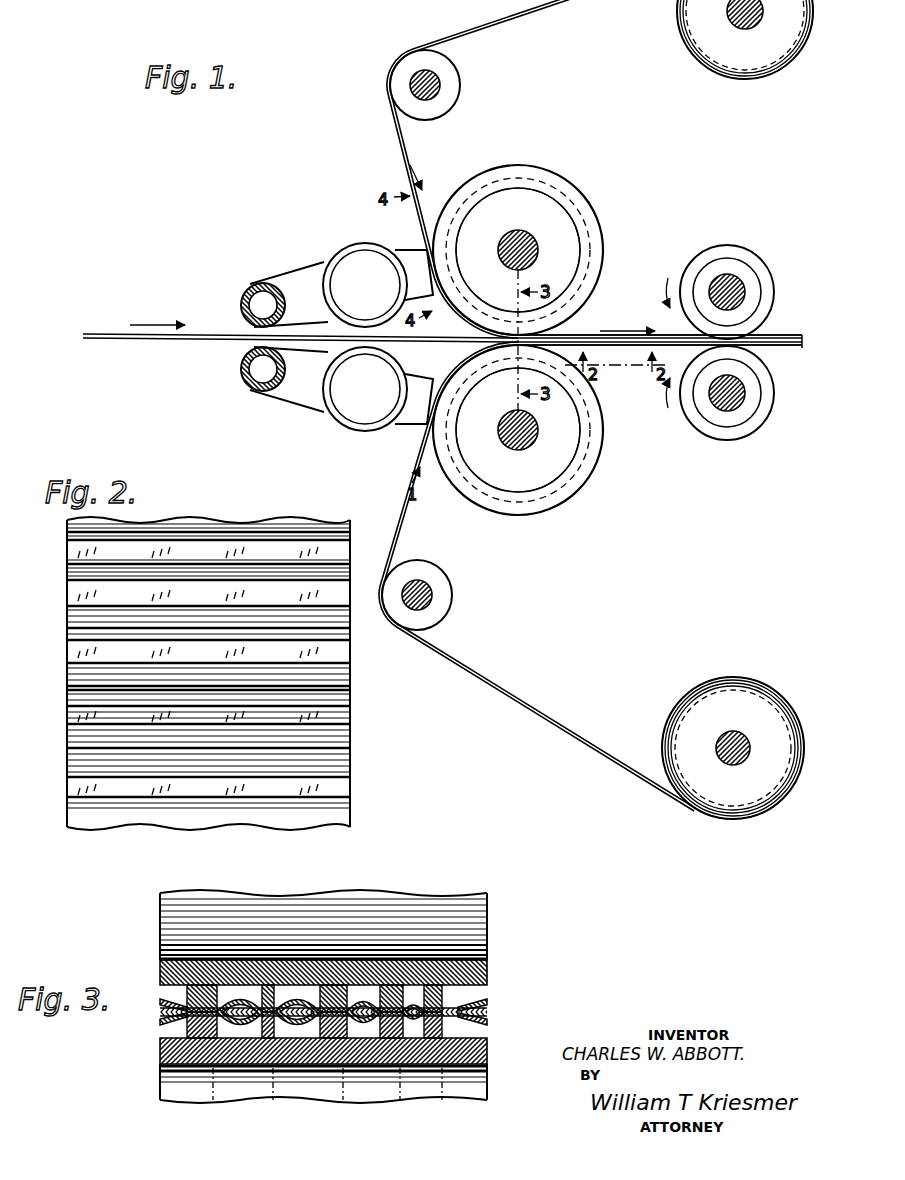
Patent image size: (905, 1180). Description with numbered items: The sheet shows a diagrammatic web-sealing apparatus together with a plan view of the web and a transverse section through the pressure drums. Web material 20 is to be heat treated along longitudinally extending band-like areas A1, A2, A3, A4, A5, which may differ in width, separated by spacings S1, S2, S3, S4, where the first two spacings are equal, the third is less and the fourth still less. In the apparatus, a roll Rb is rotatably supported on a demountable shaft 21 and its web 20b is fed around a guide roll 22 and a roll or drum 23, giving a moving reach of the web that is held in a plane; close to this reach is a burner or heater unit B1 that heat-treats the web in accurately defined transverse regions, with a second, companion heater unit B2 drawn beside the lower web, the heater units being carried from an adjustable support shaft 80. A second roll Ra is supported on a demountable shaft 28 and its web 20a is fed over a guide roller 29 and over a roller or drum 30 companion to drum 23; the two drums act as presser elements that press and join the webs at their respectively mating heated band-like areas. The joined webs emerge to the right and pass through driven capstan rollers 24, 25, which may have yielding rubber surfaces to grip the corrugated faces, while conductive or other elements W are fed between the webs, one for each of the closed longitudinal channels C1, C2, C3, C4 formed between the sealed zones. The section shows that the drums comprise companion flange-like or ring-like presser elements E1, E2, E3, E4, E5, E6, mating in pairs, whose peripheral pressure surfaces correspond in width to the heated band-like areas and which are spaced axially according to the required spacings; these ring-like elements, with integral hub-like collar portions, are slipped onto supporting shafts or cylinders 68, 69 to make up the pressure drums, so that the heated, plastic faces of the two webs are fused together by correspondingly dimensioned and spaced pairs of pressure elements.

In FIG. 1, the conductive or other elements W is at (112, 340).
In FIG. 3, the conductive or other elements W is at (323, 1012).
In FIG. 2, the sheet or web material 20 is at (355, 745).
In FIG. 1, the web 20a is at (803, 334).
In FIG. 3, the web 20a is at (158, 1030).
In FIG. 1, the web 20b is at (408, 152).
In FIG. 3, the web 20b is at (158, 972).
In FIG. 1, the shaft 21 is at (740, 22).
In FIG. 1, the guide roll 22 is at (452, 80).
In FIG. 1, the roll or drum 23 is at (600, 254).
In FIG. 1, the capstan roller or drum 24 is at (750, 265).
In FIG. 1, the capstan roller or drum 25 is at (752, 422).
In FIG. 1, the demountable shaft 28 is at (733, 730).
In FIG. 1, the guide roller 29 is at (444, 598).
In FIG. 1, the roller or drum 30 is at (590, 430).
In FIG. 1, the shaft or cylinder 68 is at (565, 216).
In FIG. 3, the shaft or cylinder 68 is at (158, 930).
In FIG. 1, the shaft or cylinder 69 is at (552, 462).
In FIG. 3, the shaft or cylinder 69 is at (158, 1085).
In FIG. 1, the shaft 80 is at (243, 302).
In FIG. 1, the burner or heater unit B1 is at (340, 245).
In FIG. 1, the lower arm B2 is at (340, 432).
In FIG. 1, the roll Ra is at (722, 795).
In FIG. 1, the roll Rb is at (697, 30).
In FIG. 2, the strip or band-like area A1 is at (75, 790).
In FIG. 3, the strip or band-like area A1 is at (202, 1003).
In FIG. 2, the strip or band-like area A2 is at (75, 653).
In FIG. 3, the strip or band-like area A2 is at (340, 1003).
In FIG. 2, the strip or band-like area A3 is at (75, 597).
In FIG. 3, the strip or band-like area A3 is at (392, 1003).
In FIG. 2, the strip or band-like area A4 is at (75, 551).
In FIG. 3, the strip or band-like area A4 is at (440, 1003).
In FIG. 2, the strip or band-like area A5 is at (75, 718).
In FIG. 3, the strip or band-like area A5 is at (267, 1003).
In FIG. 2, the spacing S1 is at (352, 755).
In FIG. 2, the spacing S2 is at (352, 698).
In FIG. 2, the spacing S3 is at (352, 630).
In FIG. 2, the spacing S4 is at (352, 580).
In FIG. 3, the presser element E1 is at (490, 1003).
In FIG. 3, the presser element E2 is at (490, 1021).
In FIG. 3, the presser element E3 is at (432, 995).
In FIG. 3, the presser element E4 is at (410, 1030).
In FIG. 3, the presser element E5 is at (333, 995).
In FIG. 3, the presser element E6 is at (334, 1030).
In FIG. 3, the channel or space C1 is at (243, 1088).
In FIG. 3, the channel or space C2 is at (308, 1086).
In FIG. 3, the channel or space C3 is at (371, 1086).
In FIG. 3, the cell 4 C4 is at (421, 1086).